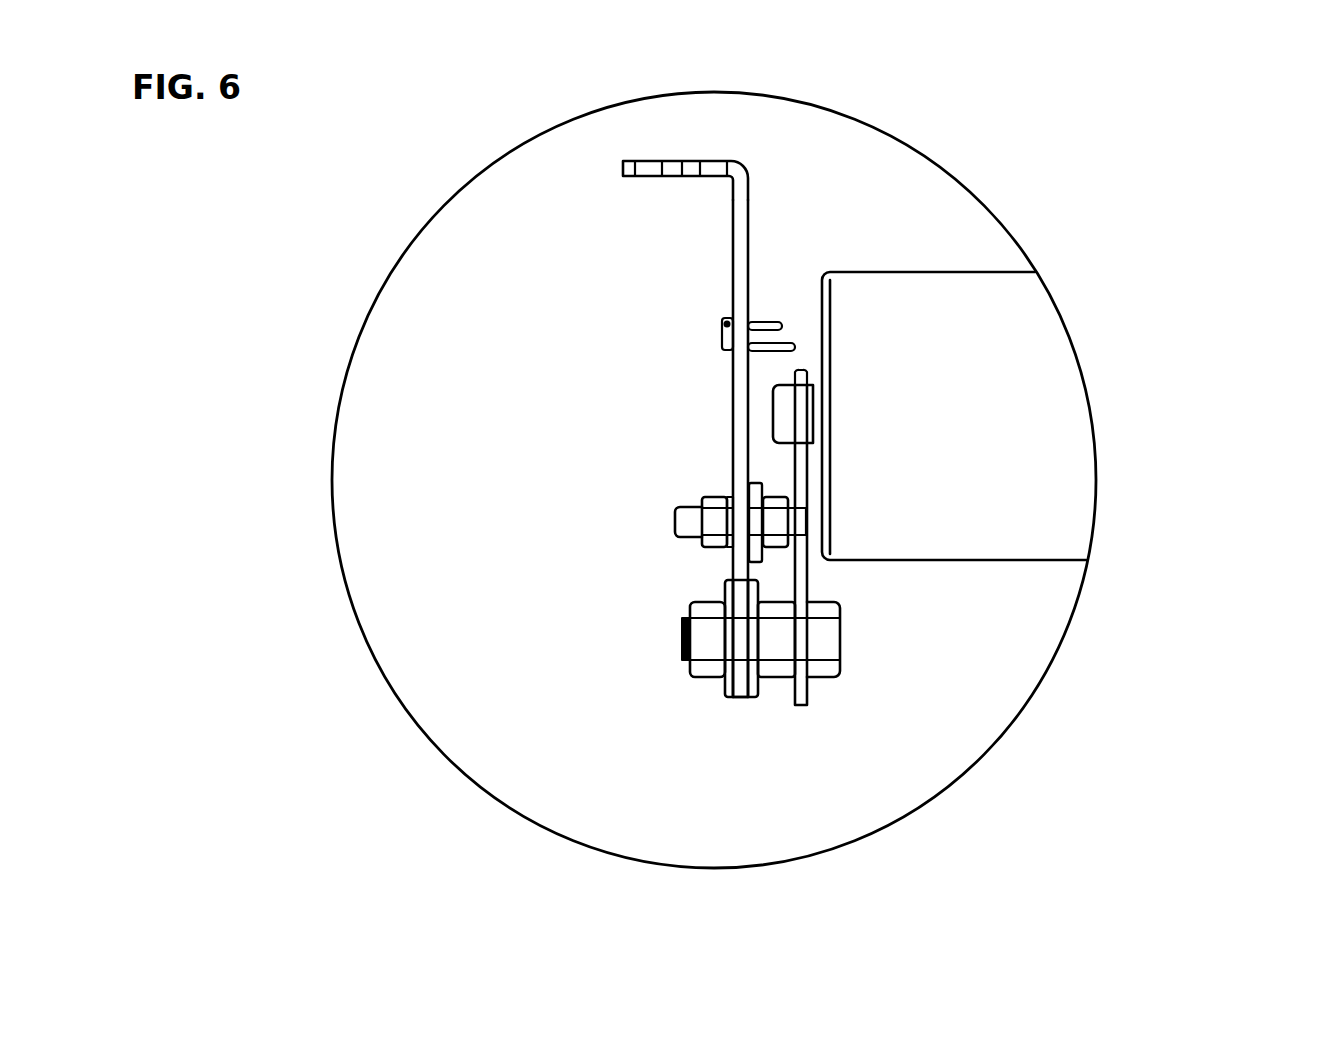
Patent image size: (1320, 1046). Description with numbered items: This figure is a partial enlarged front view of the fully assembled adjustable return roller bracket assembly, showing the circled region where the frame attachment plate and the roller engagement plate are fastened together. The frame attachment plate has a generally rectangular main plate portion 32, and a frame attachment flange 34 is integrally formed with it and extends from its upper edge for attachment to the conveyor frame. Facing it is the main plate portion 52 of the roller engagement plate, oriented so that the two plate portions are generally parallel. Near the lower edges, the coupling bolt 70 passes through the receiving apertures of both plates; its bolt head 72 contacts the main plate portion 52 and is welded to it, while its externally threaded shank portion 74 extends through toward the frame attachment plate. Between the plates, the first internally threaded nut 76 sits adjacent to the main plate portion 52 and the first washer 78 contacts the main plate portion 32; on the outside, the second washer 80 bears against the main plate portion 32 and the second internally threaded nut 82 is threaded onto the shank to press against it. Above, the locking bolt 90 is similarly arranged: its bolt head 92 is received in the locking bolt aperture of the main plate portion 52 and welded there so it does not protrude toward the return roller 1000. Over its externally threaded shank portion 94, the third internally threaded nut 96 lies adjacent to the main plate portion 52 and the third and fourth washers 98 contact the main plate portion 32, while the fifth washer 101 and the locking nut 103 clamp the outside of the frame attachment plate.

The return roller 1000 is at (1087, 390).
The frame attachment flange 34 is at (678, 175).
The main plate portion 32 is at (740, 205).
The locking bolt 90 is at (487, 409).
The externally threaded shank portion 94 is at (690, 518).
The locking nut 103 is at (712, 502).
The fifth washer 101 is at (727, 490).
The third internally threaded nut 96 is at (777, 505).
The bolt head 92 is at (805, 524).
The third and fourth washers 98 is at (793, 443).
The main plate portion 52 is at (805, 589).
The coupling bolt 70 is at (682, 720).
The externally threaded shank portion 74 is at (683, 657).
The second internally threaded nut 82 is at (690, 603).
The second washer 80 is at (728, 588).
The first washer 78 is at (757, 696).
The first internally threaded nut 76 is at (777, 667).
The bolt head 72 is at (826, 645).